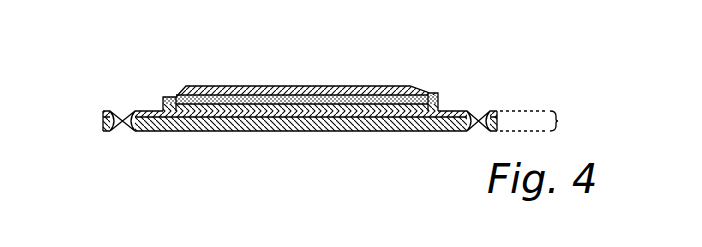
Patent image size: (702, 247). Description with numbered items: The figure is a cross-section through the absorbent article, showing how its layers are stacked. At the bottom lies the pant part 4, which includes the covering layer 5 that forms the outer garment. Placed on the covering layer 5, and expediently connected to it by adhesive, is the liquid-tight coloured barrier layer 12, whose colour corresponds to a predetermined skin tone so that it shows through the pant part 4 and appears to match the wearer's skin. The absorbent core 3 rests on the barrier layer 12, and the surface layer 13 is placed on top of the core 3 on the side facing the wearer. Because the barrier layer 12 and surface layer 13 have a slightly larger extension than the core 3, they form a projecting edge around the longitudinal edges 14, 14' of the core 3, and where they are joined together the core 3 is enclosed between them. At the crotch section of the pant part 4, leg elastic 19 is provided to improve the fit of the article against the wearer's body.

The absorbent core 3 is at (310, 86).
The pant part 4 is at (206, 131).
The covering layer 5 is at (537, 120).
The barrier layer 12 is at (310, 113).
The surface layer 13 is at (230, 86).
The longitudinal edge 14 is at (449, 82).
The longitudinal edge 14' is at (135, 71).
The leg elastic 19 is at (113, 117).